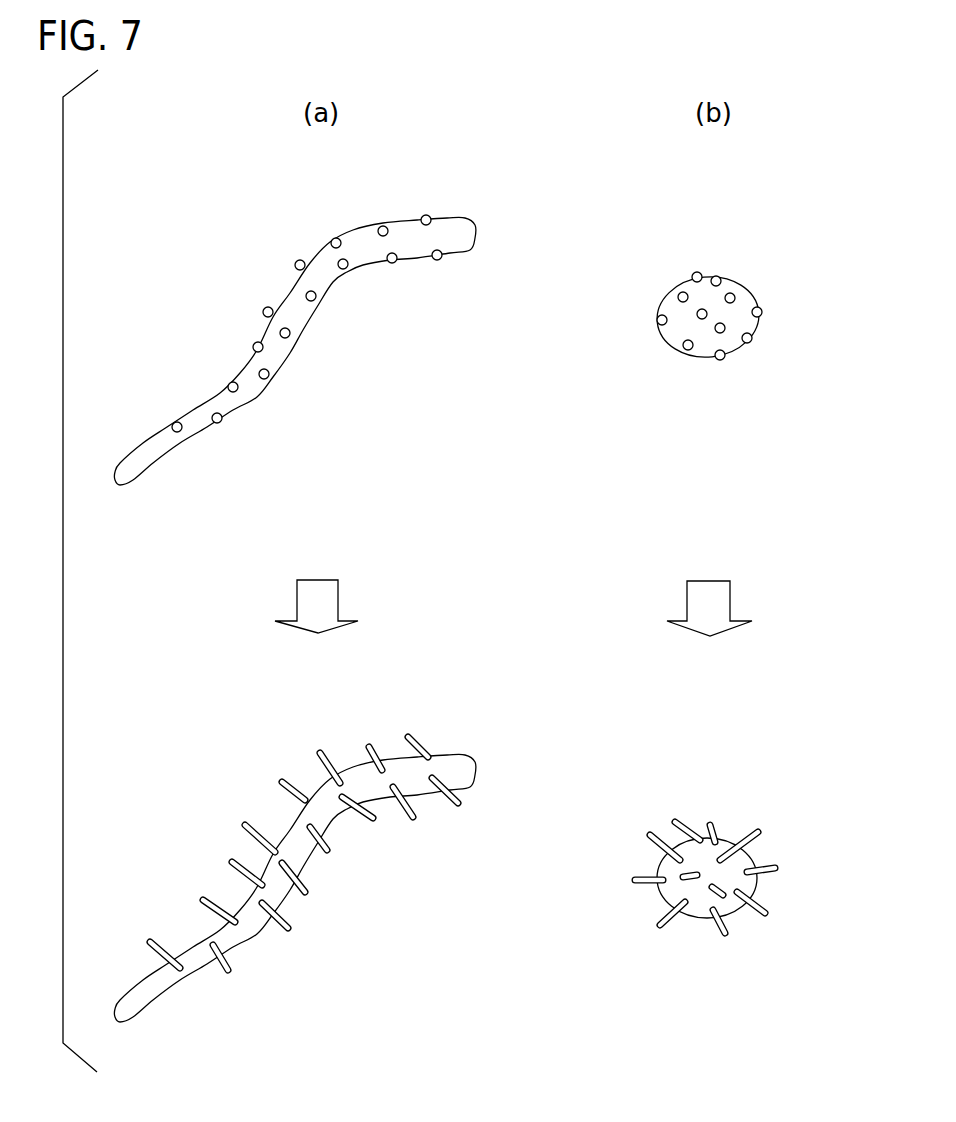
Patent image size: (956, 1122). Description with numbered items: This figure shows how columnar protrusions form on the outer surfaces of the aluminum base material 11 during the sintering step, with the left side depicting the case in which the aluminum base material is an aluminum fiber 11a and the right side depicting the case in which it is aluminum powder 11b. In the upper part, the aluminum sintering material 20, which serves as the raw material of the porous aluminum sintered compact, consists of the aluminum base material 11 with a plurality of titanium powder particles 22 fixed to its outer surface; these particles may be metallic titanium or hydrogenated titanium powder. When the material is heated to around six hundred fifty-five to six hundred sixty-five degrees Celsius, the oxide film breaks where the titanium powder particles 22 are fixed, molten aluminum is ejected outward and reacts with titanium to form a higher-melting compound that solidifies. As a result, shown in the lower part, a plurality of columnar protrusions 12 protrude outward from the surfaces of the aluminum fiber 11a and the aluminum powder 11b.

The aluminum base material 11 is at (486, 591).
The aluminum fiber 11a is at (360, 242).
The aluminum powder 11b is at (742, 292).
The titanium powder particles 22 is at (264, 308).
The columnar protrusions 12 is at (402, 795).
The aluminum sintering material 20 is at (280, 424).